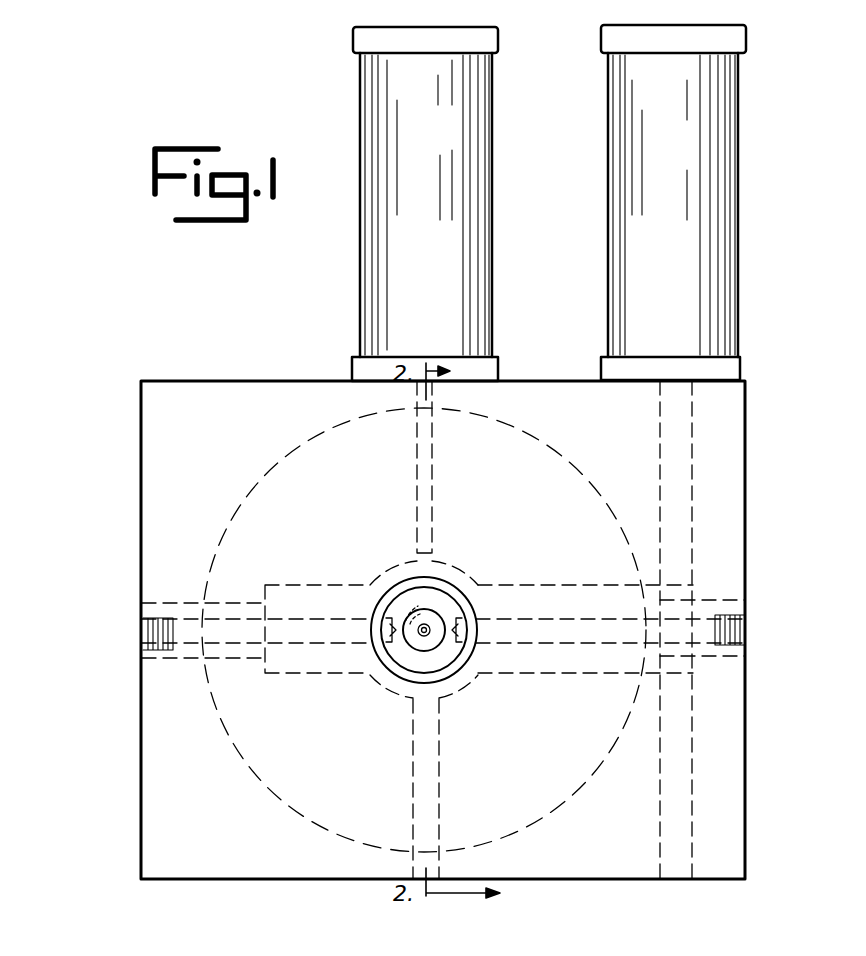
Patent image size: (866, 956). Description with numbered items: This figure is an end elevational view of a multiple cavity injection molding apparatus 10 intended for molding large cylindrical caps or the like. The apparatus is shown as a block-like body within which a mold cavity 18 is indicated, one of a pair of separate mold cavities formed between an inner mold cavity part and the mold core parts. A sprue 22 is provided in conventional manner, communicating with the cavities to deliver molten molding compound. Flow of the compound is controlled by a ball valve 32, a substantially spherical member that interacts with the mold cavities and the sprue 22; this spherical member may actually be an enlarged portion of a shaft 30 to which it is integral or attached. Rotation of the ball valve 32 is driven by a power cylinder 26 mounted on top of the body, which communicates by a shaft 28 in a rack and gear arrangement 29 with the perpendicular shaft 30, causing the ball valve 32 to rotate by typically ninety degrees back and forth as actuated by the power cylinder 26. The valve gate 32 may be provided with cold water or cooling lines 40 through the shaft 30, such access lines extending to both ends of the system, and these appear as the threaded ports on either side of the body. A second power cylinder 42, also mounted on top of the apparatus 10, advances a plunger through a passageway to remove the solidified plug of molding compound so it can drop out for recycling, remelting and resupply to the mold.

The molding apparatus 10 is at (134, 432).
The mold cavity 18 is at (536, 438).
The sprue 22 is at (432, 620).
The power cylinder 26 is at (690, 156).
The shaft 28 is at (692, 480).
The rack and gear arrangement 29 is at (690, 594).
The shaft 30 is at (579, 655).
The ball valve 32 is at (458, 697).
The cooling lines 40 is at (143, 630).
The power cylinder 42 is at (458, 141).